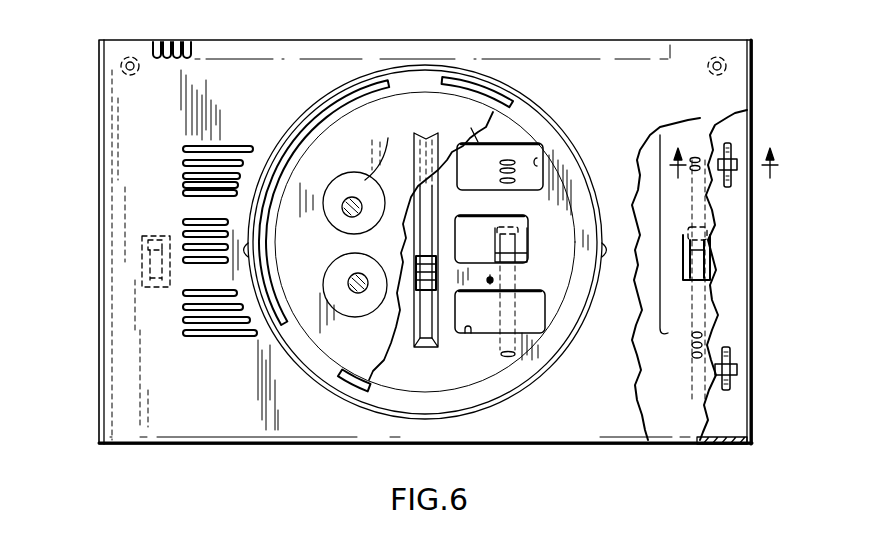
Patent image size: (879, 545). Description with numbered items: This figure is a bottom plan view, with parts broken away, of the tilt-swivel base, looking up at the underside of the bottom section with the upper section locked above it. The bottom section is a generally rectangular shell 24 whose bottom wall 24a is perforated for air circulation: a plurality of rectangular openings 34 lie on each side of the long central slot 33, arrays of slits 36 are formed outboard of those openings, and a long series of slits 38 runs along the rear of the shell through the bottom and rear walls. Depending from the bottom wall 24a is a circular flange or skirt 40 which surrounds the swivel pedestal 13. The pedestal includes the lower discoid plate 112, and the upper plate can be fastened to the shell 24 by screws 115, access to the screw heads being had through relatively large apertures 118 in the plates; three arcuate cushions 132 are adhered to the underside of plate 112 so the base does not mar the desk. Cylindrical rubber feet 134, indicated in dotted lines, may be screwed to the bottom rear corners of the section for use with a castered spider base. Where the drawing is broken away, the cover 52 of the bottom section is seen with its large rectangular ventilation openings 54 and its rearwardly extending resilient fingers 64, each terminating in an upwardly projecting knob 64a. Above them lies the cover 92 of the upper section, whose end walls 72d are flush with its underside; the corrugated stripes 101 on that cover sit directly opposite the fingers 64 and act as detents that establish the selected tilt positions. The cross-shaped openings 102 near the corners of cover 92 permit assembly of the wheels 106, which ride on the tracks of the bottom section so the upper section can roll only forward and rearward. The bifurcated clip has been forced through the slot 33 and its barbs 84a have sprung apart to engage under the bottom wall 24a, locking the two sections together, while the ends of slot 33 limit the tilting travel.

The swivel pedestal 13 is at (508, 114).
The shell 24 is at (132, 440).
The bottom wall 24a is at (110, 121).
The slot 33 is at (415, 334).
The rectangular openings 34 is at (540, 158).
The slits 36 is at (180, 176).
The slits 38 is at (178, 42).
The circular flange or skirt 40 is at (523, 383).
The cover 52 is at (706, 458).
The rectangular openings 54 is at (705, 275).
The resilient fingers 64 is at (152, 287).
The knob 64a is at (175, 221).
The end walls 72d is at (100, 355).
The barbs 84a is at (420, 258).
The cover 92 is at (772, 408).
The corrugated stripes 101 is at (515, 158).
The cross-shaped openings 102 is at (733, 353).
The wheels 106 is at (738, 370).
The lower discoid plate 112 is at (360, 124).
The screws 115 is at (380, 185).
The apertures 118 is at (388, 148).
The arcuate cushions 132 is at (372, 92).
The rubber feet 134 is at (118, 72).